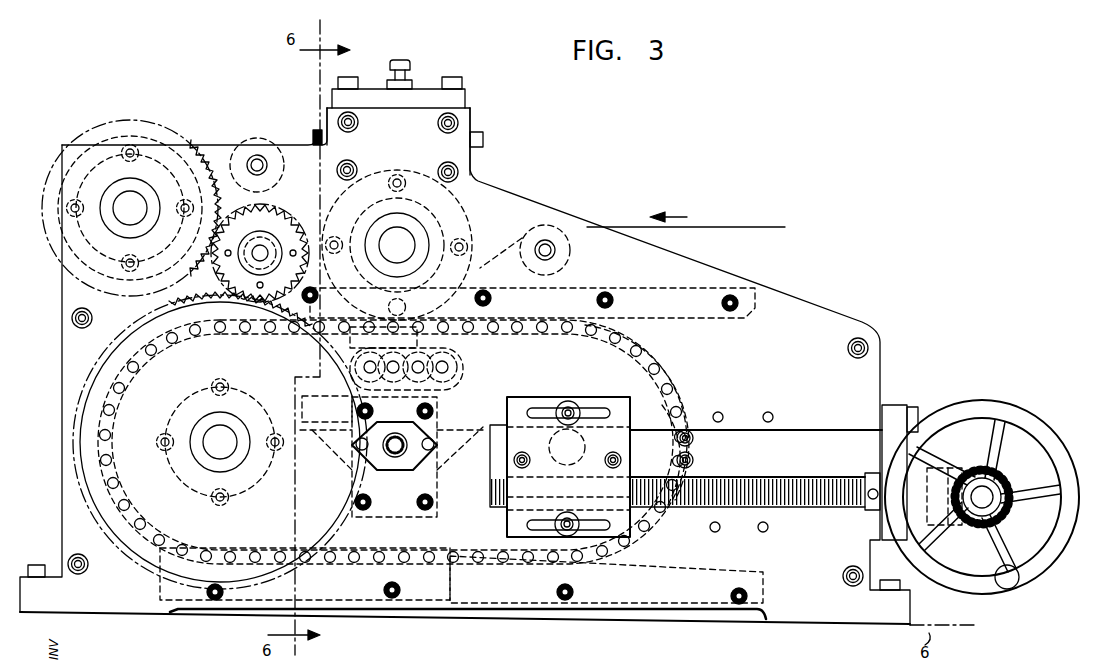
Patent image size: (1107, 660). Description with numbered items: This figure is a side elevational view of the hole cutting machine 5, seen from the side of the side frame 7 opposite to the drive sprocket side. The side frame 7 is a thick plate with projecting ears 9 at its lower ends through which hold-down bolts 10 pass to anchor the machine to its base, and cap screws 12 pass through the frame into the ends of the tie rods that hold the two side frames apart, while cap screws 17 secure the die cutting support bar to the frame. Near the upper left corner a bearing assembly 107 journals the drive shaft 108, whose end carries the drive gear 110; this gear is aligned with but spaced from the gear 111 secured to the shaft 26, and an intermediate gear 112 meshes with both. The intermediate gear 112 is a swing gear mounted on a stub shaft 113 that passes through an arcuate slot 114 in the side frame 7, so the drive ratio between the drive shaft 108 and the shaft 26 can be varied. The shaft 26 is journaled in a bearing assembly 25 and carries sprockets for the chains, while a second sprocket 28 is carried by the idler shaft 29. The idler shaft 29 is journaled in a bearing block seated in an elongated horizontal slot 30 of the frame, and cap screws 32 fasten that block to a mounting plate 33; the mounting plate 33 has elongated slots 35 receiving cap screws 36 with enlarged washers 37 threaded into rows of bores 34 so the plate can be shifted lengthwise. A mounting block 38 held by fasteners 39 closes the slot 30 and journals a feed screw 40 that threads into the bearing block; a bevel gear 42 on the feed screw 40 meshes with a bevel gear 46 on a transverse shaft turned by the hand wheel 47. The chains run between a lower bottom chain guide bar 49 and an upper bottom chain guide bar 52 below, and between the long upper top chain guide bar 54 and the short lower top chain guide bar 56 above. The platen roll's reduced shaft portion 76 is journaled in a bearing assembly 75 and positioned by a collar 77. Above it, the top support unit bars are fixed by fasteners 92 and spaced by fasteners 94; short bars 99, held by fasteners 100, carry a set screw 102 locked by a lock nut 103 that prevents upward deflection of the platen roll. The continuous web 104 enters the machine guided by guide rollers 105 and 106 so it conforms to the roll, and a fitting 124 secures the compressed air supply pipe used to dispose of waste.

The hole cutting machine 5 is at (497, 183).
The side frame 7 is at (783, 303).
The projecting ears 9 is at (24, 592).
The hold-down bolts 10 is at (33, 564).
The cap screws 12 is at (90, 320).
The cap screws 17 is at (415, 411).
The bearing assemblies 25 is at (246, 480).
The shaft 26 is at (242, 448).
The sprockets 28 is at (666, 366).
The idler shaft 29 is at (586, 445).
The elongated horizontal slot 30 is at (822, 428).
The cap screws 32 is at (525, 455).
The mounting plates 33 is at (633, 468).
The internally threaded bores 34 is at (718, 412).
The elongated slot 35 is at (614, 410).
The cap screw 36 is at (566, 405).
The enlarged washer 37 is at (575, 408).
The mounting block 38 is at (897, 405).
The fasteners 39 is at (920, 408).
The feed screw 40 is at (794, 480).
The bevel gear 42 is at (946, 495).
The bevel gears 46 is at (1003, 478).
The hand wheel 47 is at (985, 400).
The lower bottom chain guide bar 49 is at (667, 580).
The upper bottom chain guide bar 52 is at (348, 567).
The upper top chain guide bar 54 is at (652, 300).
The lower top chain guide bars 56 is at (500, 351).
The bearing assembly 75 is at (464, 216).
The reduced shaft portion 76 is at (410, 252).
The collars 77 is at (417, 227).
The fasteners 92 is at (358, 123).
The fasteners 94 is at (313, 128).
The short bars 99 is at (468, 100).
The fasteners 100 is at (348, 77).
The set screw 102 is at (408, 62).
The lock nut 103 is at (402, 89).
The continuous web 104 is at (723, 227).
The guide roller 105 is at (570, 251).
The guide roller 106 is at (257, 140).
The bearing assembly 107 is at (160, 180).
The drive shaft 108 is at (120, 216).
The drive gear 110 is at (160, 130).
The gear 111 is at (73, 438).
The intermediate gear 112 is at (278, 208).
The stub shaft 113 is at (270, 260).
The arcuate slot 114 is at (264, 234).
The fitting 124 is at (378, 470).